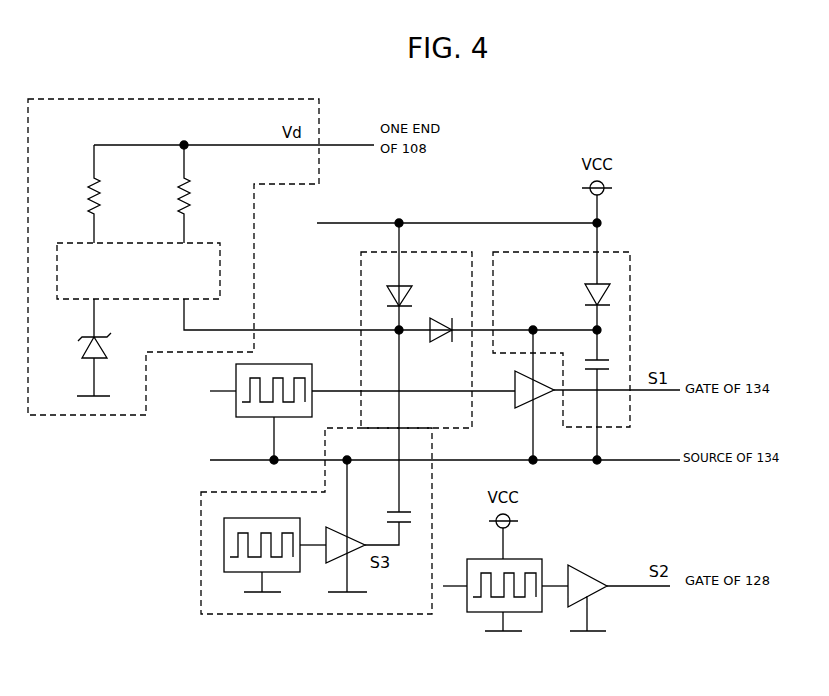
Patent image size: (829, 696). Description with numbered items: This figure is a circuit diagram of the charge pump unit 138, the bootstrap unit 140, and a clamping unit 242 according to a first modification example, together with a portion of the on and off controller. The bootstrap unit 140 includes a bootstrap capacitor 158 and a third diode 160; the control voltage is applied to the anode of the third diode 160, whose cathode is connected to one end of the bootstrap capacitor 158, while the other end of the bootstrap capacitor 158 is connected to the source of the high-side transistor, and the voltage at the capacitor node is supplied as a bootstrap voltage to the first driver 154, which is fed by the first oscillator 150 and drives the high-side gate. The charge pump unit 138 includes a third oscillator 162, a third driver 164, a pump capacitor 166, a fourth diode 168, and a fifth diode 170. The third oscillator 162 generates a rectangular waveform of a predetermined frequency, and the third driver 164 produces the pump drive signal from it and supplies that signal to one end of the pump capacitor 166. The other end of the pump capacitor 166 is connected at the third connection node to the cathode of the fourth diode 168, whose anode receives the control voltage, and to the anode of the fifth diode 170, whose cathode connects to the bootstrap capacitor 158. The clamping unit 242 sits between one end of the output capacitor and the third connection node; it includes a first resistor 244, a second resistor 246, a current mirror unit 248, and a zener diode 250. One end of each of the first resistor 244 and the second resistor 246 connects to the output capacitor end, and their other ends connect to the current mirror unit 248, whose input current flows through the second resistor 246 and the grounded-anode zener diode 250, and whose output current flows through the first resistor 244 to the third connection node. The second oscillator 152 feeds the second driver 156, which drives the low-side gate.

The clamping unit 242 is at (275, 99).
The first resistor 244 is at (193, 186).
The second resistor 246 is at (104, 186).
The current mirror unit 248 is at (64, 243).
The zener diode 250 is at (82, 347).
The fourth diode 168 is at (386, 292).
The fifth diode 170 is at (434, 318).
The bootstrap unit 140 is at (632, 258).
The third diode 160 is at (605, 295).
The bootstrap capacitor 158 is at (600, 358).
The first oscillator 150 is at (236, 412).
The first driver 154 is at (515, 400).
The charge pump unit 138 is at (350, 614).
The third oscillator 162 is at (224, 563).
The third driver 164 is at (326, 555).
The pump capacitor 166 is at (412, 522).
The second oscillator 152 is at (467, 603).
The second driver 156 is at (568, 603).